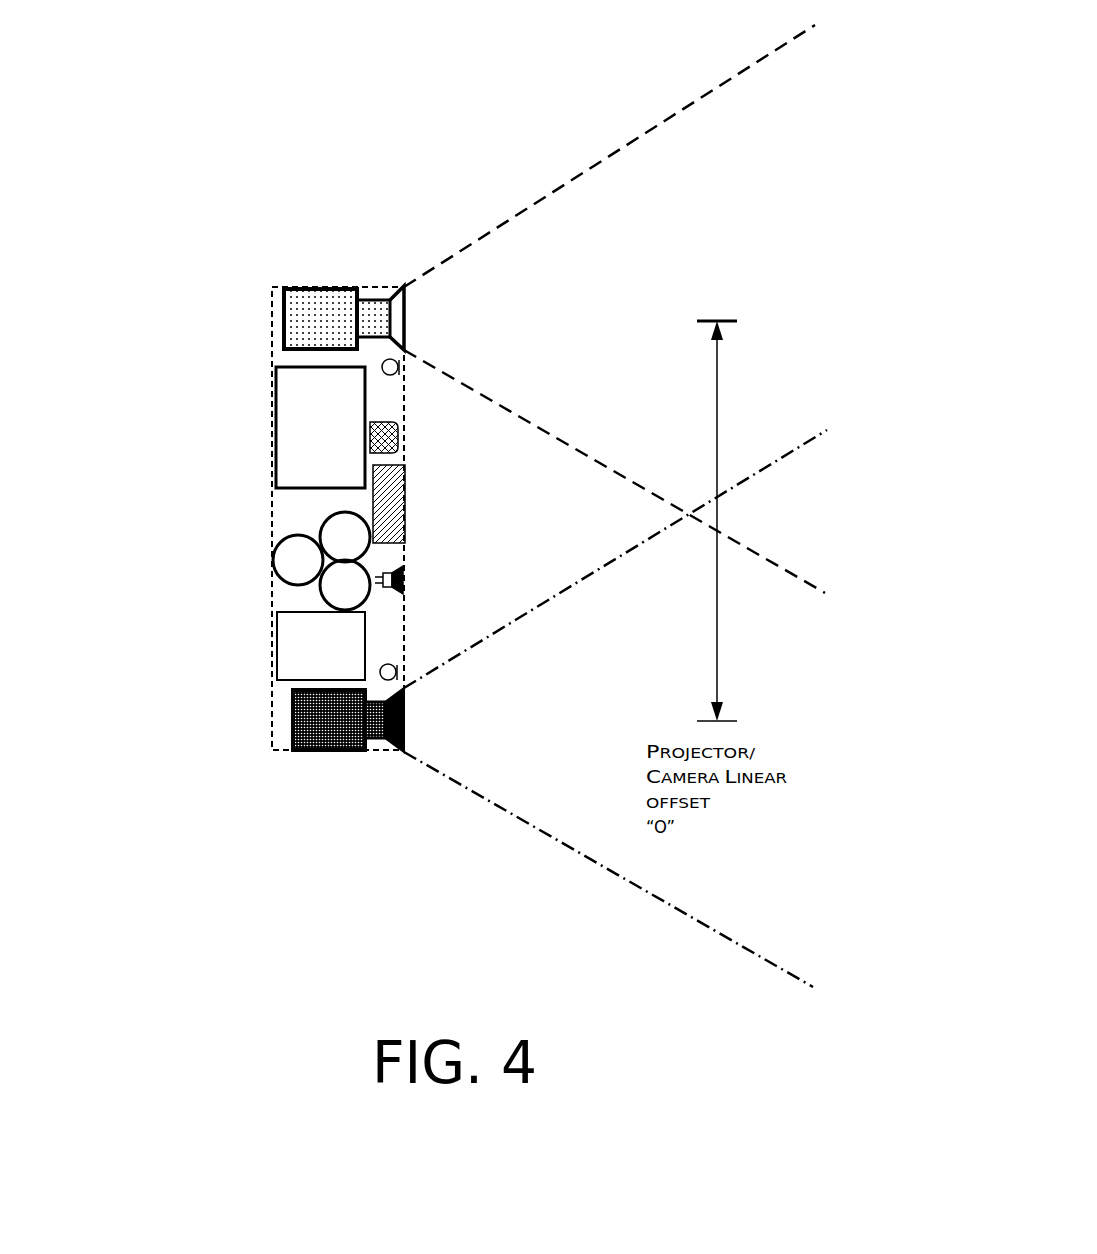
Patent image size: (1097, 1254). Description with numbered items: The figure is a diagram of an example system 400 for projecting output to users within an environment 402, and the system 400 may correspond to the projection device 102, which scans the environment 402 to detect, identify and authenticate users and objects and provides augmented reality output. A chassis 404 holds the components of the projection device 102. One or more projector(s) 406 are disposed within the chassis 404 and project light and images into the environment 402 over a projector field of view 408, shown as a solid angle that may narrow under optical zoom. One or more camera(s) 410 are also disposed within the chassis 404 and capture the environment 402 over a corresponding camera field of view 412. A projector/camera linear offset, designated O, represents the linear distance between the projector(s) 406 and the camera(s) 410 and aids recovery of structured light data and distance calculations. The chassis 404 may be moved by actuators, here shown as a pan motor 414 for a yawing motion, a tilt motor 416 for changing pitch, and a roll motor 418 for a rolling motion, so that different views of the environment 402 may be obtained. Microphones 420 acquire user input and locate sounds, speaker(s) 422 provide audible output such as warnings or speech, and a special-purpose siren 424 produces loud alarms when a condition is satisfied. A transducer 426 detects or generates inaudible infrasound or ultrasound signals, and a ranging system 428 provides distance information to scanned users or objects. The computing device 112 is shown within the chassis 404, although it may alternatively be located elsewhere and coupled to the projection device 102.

The system 400 is at (217, 30).
The projection device 102 is at (305, 287).
The chassis 404 is at (338, 287).
The projector(s) 406 is at (318, 320).
The projector field of view 408 is at (618, 150).
The microphones 420 is at (404, 358).
The transducer 426 is at (388, 440).
The computing device 112 is at (320, 430).
The ranging system 428 is at (395, 502).
The pan motor 414 is at (322, 528).
The tilt motor 416 is at (273, 560).
The roll motor 418 is at (320, 585).
The speaker(s) 422 is at (403, 580).
The siren 424 is at (320, 645).
The camera(s) 410 is at (330, 720).
The camera field of view 412 is at (568, 843).
The environment 402 is at (817, 521).